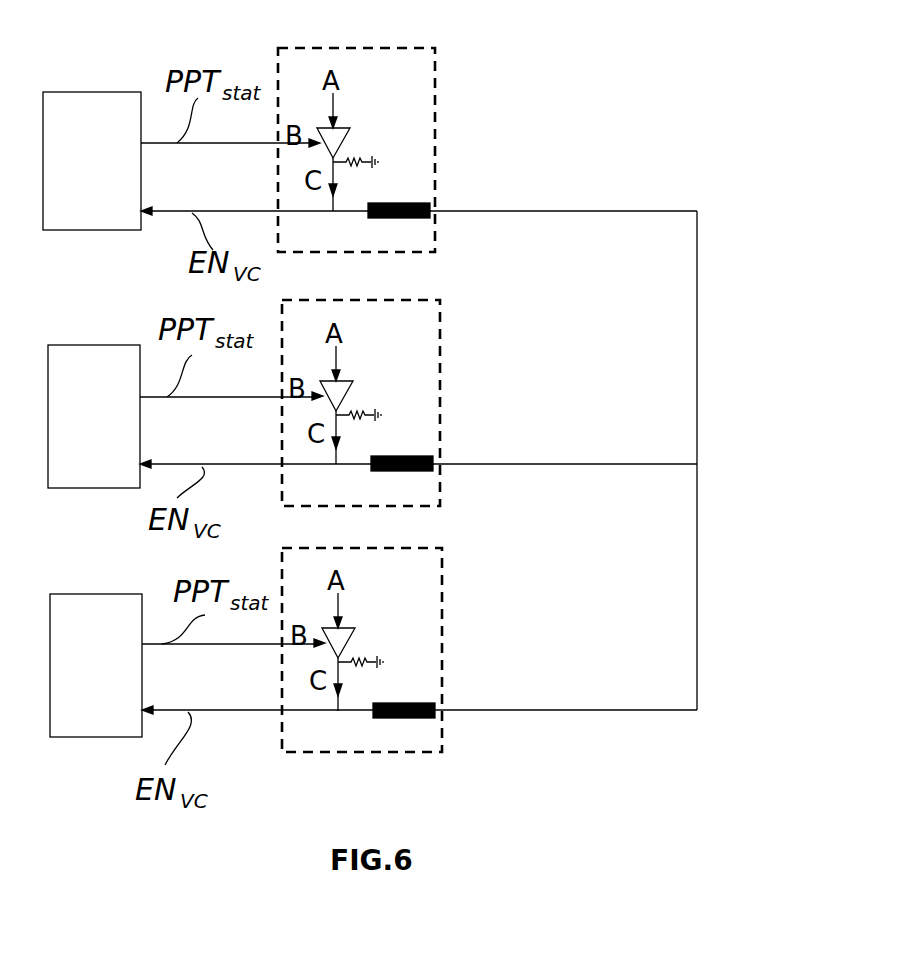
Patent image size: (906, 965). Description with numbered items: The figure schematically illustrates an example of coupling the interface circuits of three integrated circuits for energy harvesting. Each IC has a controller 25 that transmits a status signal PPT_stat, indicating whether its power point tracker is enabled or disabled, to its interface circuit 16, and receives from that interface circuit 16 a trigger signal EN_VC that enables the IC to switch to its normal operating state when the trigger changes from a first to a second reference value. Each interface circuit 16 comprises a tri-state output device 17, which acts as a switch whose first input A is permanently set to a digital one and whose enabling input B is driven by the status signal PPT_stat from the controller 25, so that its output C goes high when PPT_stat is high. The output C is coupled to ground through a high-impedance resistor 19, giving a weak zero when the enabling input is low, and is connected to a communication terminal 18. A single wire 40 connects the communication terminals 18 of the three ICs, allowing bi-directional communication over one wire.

The controller 25 is at (93, 90).
The interface circuit 16 is at (437, 115).
The tri-state output device 17 is at (338, 140).
The communication terminal 18 is at (403, 203).
The resistor 19 is at (358, 158).
The single wire 40 is at (697, 395).